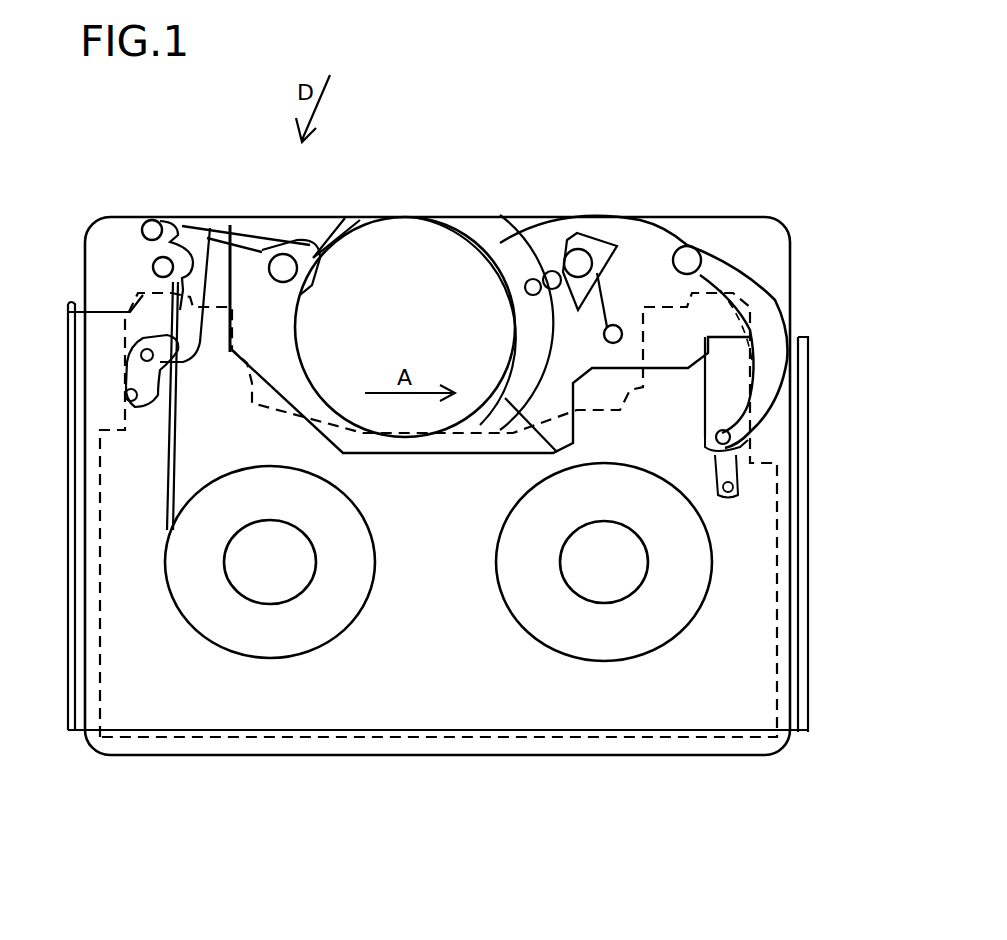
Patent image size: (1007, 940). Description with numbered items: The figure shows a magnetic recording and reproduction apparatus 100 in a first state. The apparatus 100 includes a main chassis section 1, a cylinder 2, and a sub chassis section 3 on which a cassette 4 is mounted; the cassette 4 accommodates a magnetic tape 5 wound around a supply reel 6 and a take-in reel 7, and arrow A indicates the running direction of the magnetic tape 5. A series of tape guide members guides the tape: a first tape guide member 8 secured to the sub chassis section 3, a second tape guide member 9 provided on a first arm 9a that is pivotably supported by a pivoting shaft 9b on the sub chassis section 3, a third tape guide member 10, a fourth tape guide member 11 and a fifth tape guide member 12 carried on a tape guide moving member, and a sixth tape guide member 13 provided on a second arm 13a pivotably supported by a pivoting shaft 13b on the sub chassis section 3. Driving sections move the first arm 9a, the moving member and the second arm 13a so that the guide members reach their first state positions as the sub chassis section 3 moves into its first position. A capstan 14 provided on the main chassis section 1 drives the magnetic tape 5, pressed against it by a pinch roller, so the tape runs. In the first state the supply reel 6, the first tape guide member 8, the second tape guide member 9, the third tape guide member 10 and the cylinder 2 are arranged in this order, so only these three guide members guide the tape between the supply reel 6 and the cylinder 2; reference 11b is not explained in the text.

The main chassis section 1 is at (503, 217).
The cylinder 2 is at (447, 230).
The sub chassis section 3 is at (810, 372).
The cassette 4 is at (731, 740).
The magnetic tape 5 is at (250, 225).
The supply reel 6 is at (255, 600).
The take-in reel 7 is at (587, 600).
The first tape guide member 8 is at (168, 250).
The second tape guide member 9 is at (146, 222).
The first arm 9a is at (183, 235).
The pivoting shaft 9b is at (147, 356).
The third tape guide member 10 is at (293, 252).
The fourth tape guide member 11 is at (553, 265).
The guide post 11b is at (582, 255).
The fifth tape guide member 12 is at (600, 230).
The sixth tape guide member 13 is at (690, 250).
The second arm 13a is at (760, 310).
The pivoting shaft 13b is at (730, 437).
The capstan 14 is at (617, 327).
The magnetic recording and reproduction apparatus 100 is at (887, 838).